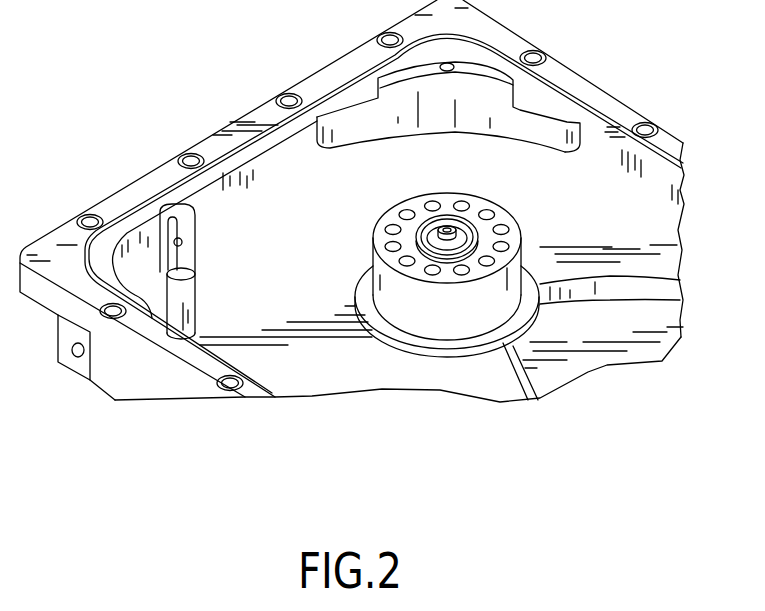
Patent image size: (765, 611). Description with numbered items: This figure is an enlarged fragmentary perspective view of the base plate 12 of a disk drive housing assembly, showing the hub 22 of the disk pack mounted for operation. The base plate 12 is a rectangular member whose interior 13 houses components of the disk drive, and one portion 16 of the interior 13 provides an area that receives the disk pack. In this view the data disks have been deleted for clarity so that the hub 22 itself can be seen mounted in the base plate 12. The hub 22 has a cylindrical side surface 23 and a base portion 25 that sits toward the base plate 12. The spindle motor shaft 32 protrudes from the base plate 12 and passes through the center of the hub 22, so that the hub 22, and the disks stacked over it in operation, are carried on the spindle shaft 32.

The base plate 12 is at (628, 41).
The interior 13 is at (603, 336).
The portion of the interior 16 is at (305, 265).
The hub 22 is at (538, 225).
The cylindrical side surface 23 is at (509, 288).
The base portion 25 is at (518, 318).
The spindle motor shaft 32 is at (450, 237).